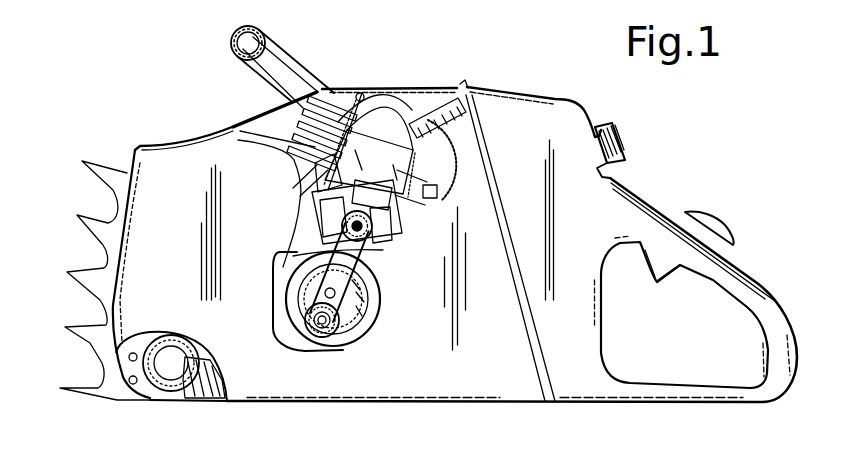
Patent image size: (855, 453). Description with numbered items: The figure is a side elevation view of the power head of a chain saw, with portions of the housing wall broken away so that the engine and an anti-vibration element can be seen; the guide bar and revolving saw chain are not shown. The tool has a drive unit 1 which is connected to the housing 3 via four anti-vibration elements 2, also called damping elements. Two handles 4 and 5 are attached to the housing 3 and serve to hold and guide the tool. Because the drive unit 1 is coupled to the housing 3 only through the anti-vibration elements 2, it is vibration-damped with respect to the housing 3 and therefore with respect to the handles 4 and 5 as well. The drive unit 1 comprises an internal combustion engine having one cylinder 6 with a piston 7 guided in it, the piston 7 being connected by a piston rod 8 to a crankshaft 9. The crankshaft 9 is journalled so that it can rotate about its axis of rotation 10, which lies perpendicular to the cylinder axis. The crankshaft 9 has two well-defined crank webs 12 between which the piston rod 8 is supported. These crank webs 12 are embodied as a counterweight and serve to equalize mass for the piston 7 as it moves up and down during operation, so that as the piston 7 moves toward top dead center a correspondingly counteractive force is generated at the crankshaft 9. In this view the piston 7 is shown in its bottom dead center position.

The drive unit 1 is at (368, 77).
The anti-vibration element 2 is at (170, 370).
The housing 3 is at (575, 223).
The handle 4 is at (748, 292).
The handle 5 is at (240, 40).
The cylinder 6 is at (383, 162).
The piston 7 is at (310, 207).
The piston rod 8 is at (350, 308).
The crankshaft 9 is at (313, 345).
The axis of rotation 10 is at (340, 345).
The crank web 12 is at (280, 255).